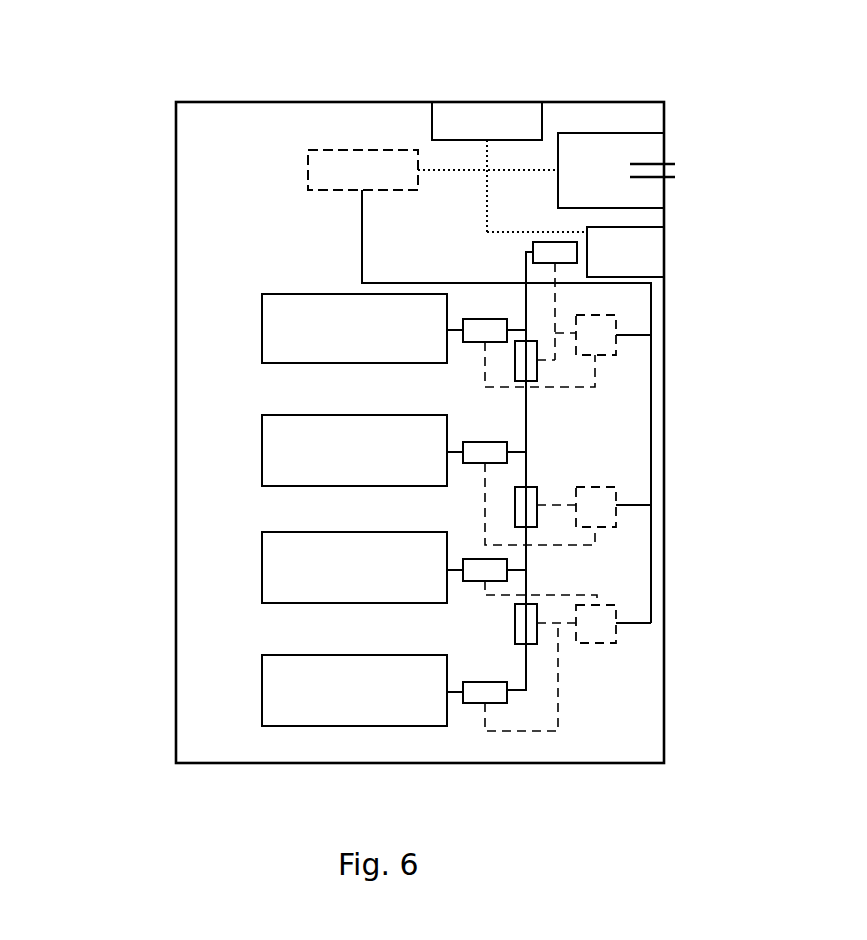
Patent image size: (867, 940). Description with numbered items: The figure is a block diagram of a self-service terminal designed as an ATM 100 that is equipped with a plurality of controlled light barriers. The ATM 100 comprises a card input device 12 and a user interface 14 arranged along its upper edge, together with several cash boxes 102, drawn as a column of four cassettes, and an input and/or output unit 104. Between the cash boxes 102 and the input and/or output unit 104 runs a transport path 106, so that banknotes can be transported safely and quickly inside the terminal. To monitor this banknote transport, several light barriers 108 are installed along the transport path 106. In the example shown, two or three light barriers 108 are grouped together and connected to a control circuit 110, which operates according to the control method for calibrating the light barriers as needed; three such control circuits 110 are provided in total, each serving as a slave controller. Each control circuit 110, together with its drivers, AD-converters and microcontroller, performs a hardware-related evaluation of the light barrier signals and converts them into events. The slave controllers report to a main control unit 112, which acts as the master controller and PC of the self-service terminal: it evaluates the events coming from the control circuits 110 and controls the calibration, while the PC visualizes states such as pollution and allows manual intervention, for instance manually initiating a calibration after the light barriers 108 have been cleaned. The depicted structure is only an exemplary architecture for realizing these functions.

The ATM 100 is at (127, 86).
The cash boxes 102 is at (262, 328).
The input and/or output unit 104 is at (654, 248).
The transport path 106 is at (527, 408).
The light barriers 108 is at (530, 648).
The control circuit 110 is at (617, 318).
The main control unit 112 is at (363, 150).
The card input device 12 is at (670, 171).
The user interface 14 is at (478, 102).